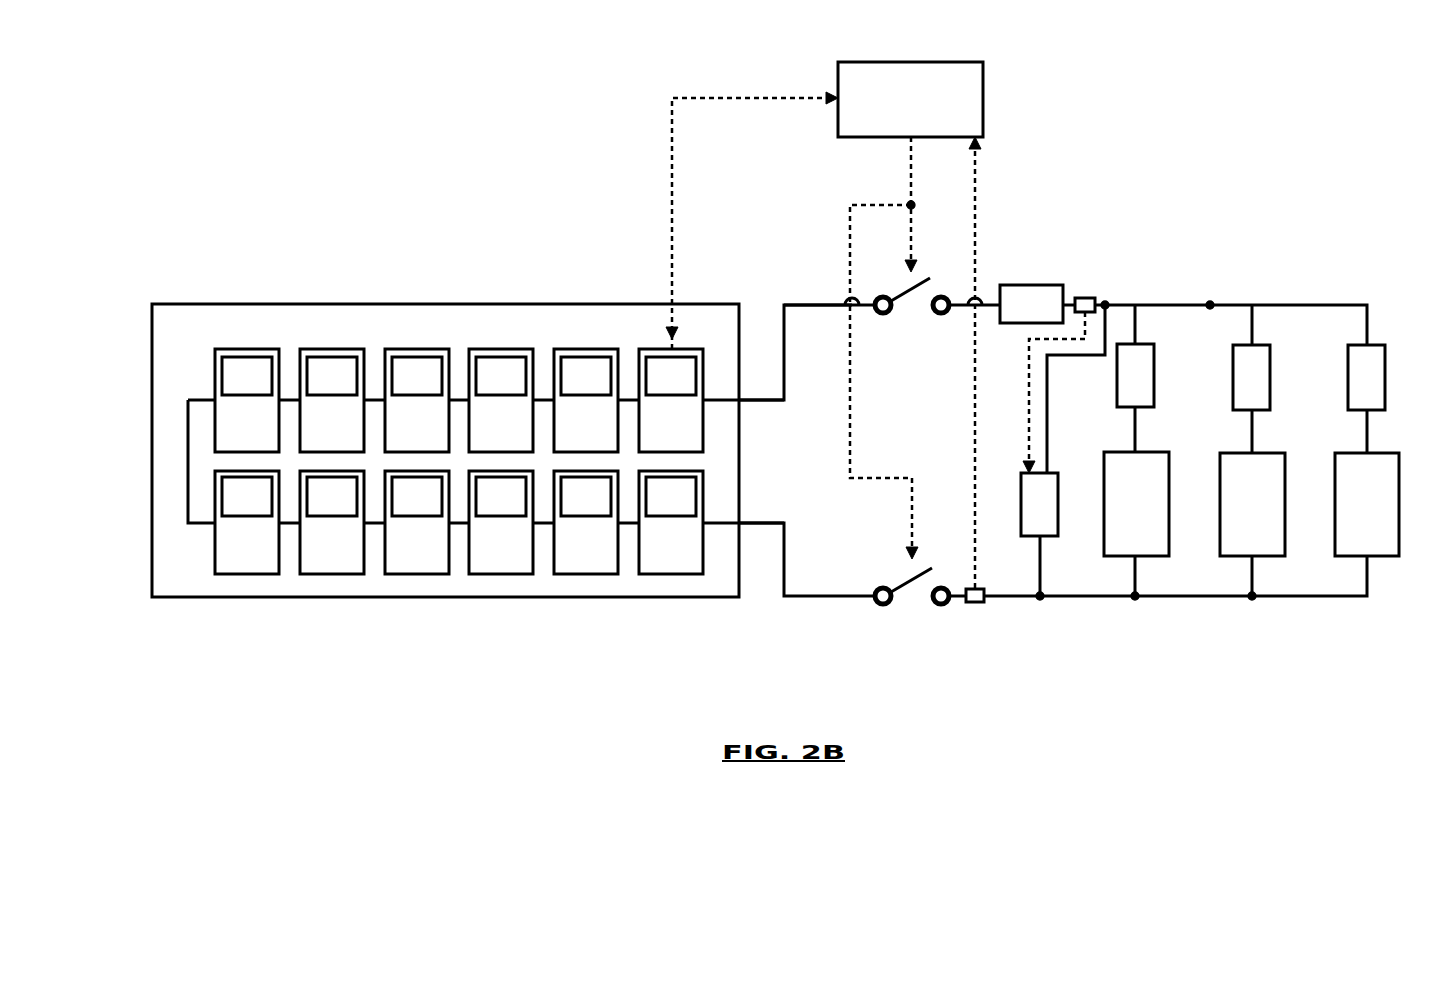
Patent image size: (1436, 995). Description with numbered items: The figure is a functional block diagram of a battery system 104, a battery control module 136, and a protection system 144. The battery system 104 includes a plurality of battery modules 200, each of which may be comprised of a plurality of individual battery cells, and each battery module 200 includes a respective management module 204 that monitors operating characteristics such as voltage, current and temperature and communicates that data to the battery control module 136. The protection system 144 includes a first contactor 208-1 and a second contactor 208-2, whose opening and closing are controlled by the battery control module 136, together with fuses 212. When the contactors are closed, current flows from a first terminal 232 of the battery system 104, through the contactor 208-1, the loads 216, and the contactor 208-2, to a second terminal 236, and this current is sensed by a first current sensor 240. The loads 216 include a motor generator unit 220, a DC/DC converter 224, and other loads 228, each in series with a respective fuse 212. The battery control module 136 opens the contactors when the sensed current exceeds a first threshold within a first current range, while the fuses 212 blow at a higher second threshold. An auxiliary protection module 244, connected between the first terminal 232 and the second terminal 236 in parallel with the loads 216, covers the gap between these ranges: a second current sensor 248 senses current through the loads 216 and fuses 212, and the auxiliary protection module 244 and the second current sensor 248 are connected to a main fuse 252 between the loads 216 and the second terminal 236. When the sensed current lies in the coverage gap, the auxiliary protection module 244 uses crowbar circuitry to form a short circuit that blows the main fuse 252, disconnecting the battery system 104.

The battery system 104 is at (448, 597).
The battery modules 200 is at (236, 349).
The management module 204 is at (222, 375).
The second terminal 236 is at (765, 400).
The first terminal 232 is at (762, 523).
The battery control module 136 is at (983, 99).
The first contactor 208-1 is at (926, 327).
The second contactor 208-2 is at (912, 612).
The protection system 144 is at (1160, 226).
The main fuse 252 is at (1035, 285).
The second current sensor 248 is at (1088, 298).
The auxiliary protection module 244 is at (1032, 537).
The first current sensor 240 is at (975, 603).
The fuses 212 is at (1155, 372).
The motor generator unit 220 is at (1118, 557).
The DC/DC converter 224 is at (1237, 557).
The other loads 228 is at (1382, 557).
The loads 216 is at (1320, 654).